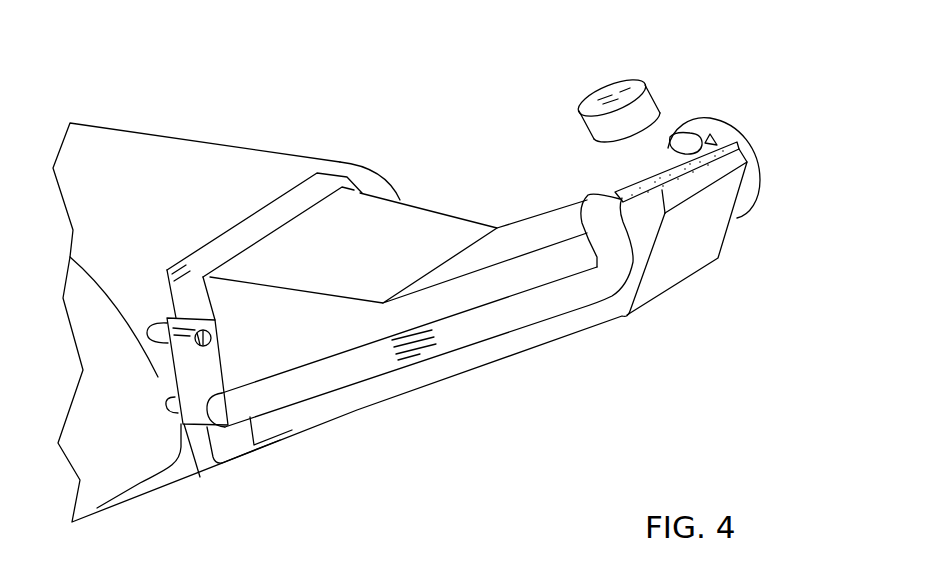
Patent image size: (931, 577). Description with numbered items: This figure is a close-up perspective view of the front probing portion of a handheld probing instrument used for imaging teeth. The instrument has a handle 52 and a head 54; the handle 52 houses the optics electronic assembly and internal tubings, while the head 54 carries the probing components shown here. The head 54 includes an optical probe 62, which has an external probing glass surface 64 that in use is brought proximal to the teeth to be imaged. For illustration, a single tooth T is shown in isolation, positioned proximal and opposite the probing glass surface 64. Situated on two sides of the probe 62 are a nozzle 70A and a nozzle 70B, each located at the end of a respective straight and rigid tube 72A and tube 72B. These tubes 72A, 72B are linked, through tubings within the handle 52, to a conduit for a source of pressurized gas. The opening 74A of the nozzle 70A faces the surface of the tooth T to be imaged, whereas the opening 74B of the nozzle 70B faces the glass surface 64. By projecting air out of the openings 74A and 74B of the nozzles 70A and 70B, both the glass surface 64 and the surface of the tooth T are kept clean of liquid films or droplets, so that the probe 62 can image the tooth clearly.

The handle 52 is at (143, 217).
The head 54 is at (507, 423).
The optical probe 62 is at (560, 330).
The probing glass surface 64 is at (628, 178).
The nozzle 70A is at (612, 243).
The nozzle 70B is at (700, 128).
The tube 72A is at (368, 413).
The tube 72B is at (743, 192).
The opening 74A is at (600, 203).
The opening 74B is at (662, 150).
The tooth T is at (602, 90).